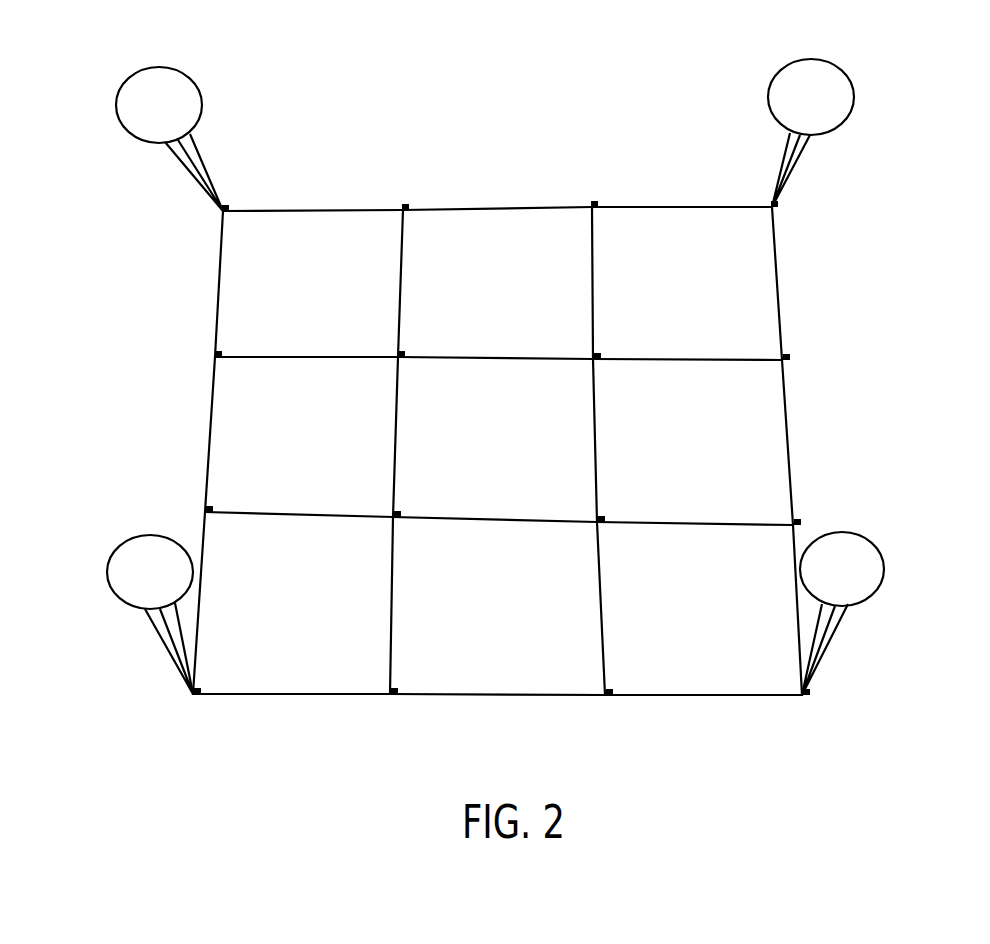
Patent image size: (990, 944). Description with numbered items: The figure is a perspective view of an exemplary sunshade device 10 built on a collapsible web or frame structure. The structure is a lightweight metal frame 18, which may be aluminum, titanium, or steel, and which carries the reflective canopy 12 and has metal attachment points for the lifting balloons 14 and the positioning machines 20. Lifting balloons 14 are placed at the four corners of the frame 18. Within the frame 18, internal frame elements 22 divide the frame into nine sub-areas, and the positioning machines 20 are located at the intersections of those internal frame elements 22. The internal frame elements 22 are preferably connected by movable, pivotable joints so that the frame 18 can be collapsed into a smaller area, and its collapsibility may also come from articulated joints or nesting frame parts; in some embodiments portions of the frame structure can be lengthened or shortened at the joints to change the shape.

The sunshade device 10 is at (520, 414).
The reflective canopy 12 is at (493, 447).
The lifting balloons 14 is at (833, 90).
The frame 18 is at (267, 357).
The positioning machines 20 is at (589, 200).
The internal frame elements 22 is at (495, 360).